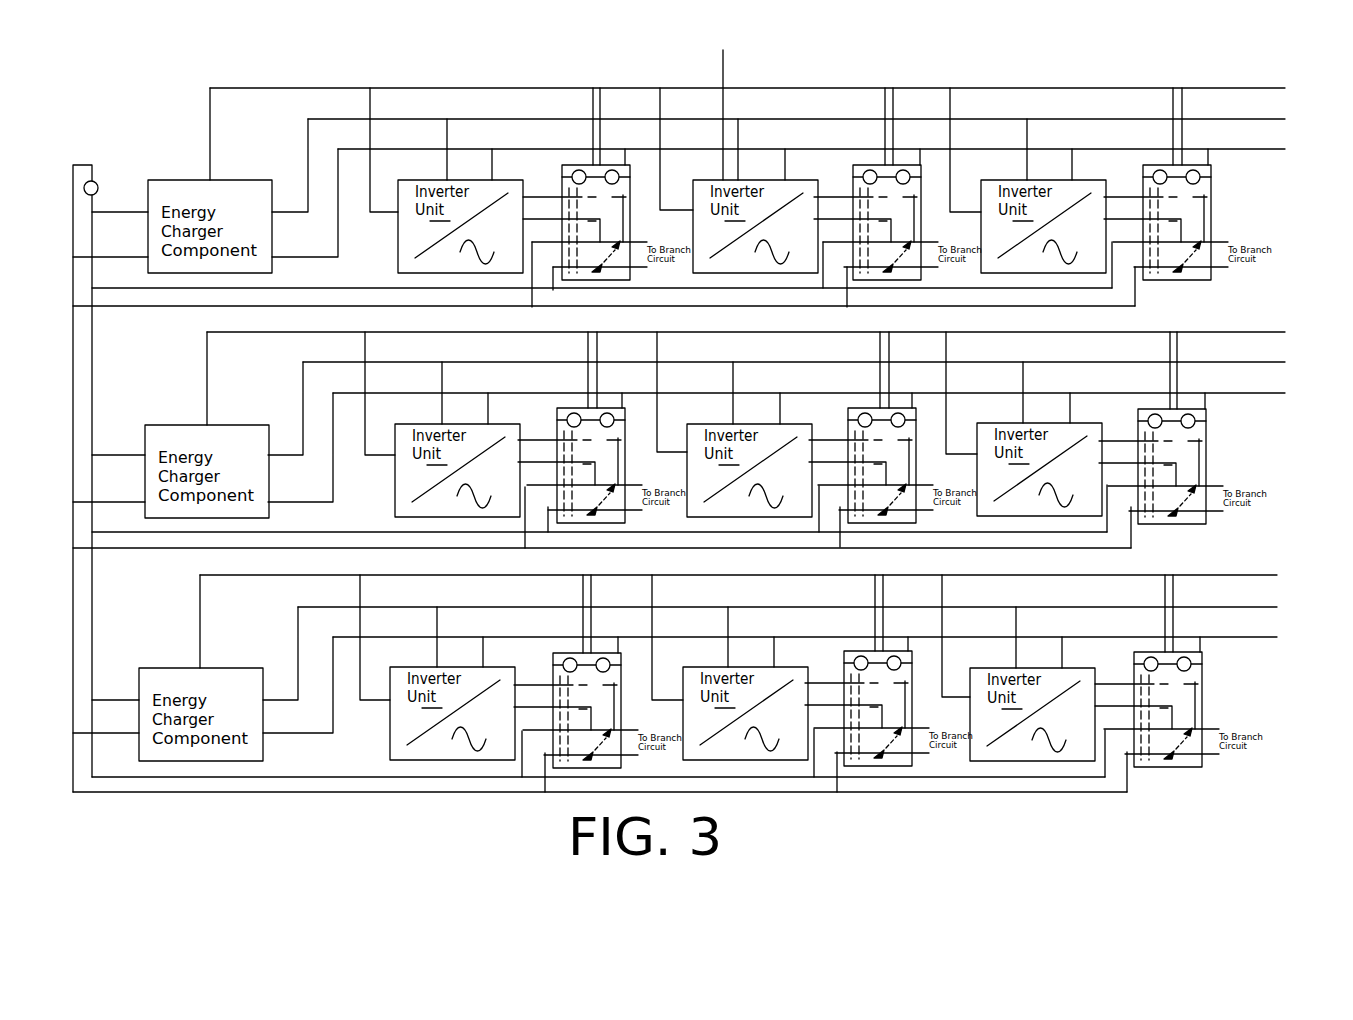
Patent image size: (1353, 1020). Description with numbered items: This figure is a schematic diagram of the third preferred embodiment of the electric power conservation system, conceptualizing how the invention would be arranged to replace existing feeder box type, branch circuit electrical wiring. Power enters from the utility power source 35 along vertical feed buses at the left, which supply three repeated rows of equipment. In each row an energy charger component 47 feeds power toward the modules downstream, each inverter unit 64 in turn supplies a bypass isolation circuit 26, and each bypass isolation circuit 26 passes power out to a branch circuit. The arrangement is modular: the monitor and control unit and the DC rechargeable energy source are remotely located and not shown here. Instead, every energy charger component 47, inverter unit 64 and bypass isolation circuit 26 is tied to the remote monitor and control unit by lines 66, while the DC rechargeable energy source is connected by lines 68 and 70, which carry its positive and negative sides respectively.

The bypass isolation circuit 26 is at (597, 653).
The utility power source 35 is at (97, 184).
The energy charger component 47 is at (230, 668).
The inverter unit 64 is at (460, 667).
The lines to monitor and control unit 66 is at (1307, 572).
The line to DC rechargeable energy source (positive) 68 is at (1307, 604).
The line to DC rechargeable energy source (negative) 70 is at (1307, 634).